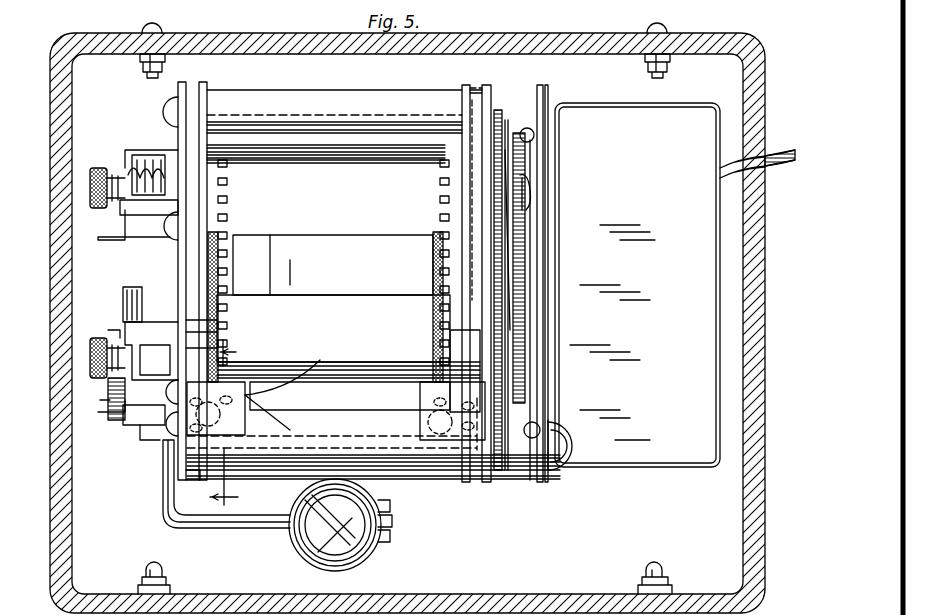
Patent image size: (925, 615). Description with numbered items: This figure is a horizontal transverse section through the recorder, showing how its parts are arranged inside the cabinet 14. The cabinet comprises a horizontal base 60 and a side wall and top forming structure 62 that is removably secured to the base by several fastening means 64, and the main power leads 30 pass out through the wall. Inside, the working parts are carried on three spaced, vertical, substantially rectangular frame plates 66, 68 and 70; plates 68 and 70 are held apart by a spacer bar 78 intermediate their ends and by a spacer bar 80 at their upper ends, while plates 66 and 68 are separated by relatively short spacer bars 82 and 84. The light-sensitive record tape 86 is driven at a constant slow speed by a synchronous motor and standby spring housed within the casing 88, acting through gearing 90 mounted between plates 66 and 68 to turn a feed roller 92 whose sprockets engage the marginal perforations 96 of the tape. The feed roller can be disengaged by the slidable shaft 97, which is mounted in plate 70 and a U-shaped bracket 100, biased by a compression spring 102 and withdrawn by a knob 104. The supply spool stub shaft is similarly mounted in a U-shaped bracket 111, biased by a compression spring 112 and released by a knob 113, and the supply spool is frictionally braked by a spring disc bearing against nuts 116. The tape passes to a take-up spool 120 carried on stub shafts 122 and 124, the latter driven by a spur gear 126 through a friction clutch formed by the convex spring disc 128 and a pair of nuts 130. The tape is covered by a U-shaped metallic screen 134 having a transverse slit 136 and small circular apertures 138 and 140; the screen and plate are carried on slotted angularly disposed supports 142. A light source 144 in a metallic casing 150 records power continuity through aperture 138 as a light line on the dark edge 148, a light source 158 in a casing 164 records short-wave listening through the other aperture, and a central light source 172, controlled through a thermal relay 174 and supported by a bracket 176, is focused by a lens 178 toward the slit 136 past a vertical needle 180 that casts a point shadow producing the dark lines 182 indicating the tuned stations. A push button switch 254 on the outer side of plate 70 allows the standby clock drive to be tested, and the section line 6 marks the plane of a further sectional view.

The section line 6 is at (230, 424).
The cabinet 14 is at (546, 34).
The power leads 30 is at (790, 164).
The base 60 is at (588, 563).
The side wall and top forming structure 62 is at (52, 218).
The fastening means 64 is at (138, 62).
The frame plate 66 is at (540, 482).
The frame plate 68 is at (486, 482).
The frame plate 70 is at (178, 268).
The spacer bar 78 is at (284, 102).
The spacer bar 80 is at (412, 462).
The spacer bar 82 is at (518, 100).
The spacer bar 84 is at (548, 445).
The light-sensitive record tape 86 is at (344, 265).
The casing 88 is at (660, 329).
The gearing 90 is at (540, 232).
The feed roller 92 is at (195, 330).
The perforations 96 is at (228, 265).
The slidable shaft 97 is at (151, 351).
The U-shaped bracket 100 is at (105, 406).
The compression spring 102 is at (110, 388).
The knob 104 is at (92, 352).
The U-shaped bracket 111 is at (120, 162).
The compression spring 112 is at (150, 168).
The knob 113 is at (90, 184).
The nuts 116 is at (258, 218).
The take-up spool 120 is at (207, 170).
The stub shaft 122 is at (135, 156).
The stub shaft 124 is at (466, 185).
The spur gear 126 is at (502, 112).
The convex spring disc 128 is at (525, 170).
The nuts 130 is at (530, 192).
The U-shaped metallic screen 134 is at (333, 328).
The transverse slit 136 is at (320, 412).
The circular aperture 138 is at (334, 329).
The circular aperture 140 is at (436, 402).
The slotted angularly disposed supports 142 is at (232, 410).
The light source 144 is at (192, 478).
The edge 148 is at (240, 296).
The metallic casing 150 is at (300, 365).
The light source 158 is at (568, 420).
The casing 164 is at (428, 400).
The light source 172 is at (366, 550).
The thermal relay 174 is at (124, 240).
The bracket 176 is at (240, 526).
The lens 178 is at (284, 470).
The needle 180 is at (297, 432).
The dark lines 182 is at (318, 275).
The push button switch 254 is at (123, 300).